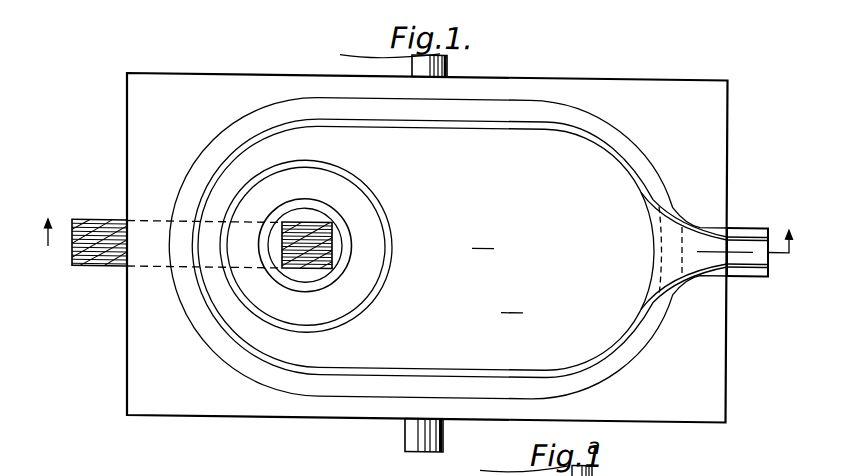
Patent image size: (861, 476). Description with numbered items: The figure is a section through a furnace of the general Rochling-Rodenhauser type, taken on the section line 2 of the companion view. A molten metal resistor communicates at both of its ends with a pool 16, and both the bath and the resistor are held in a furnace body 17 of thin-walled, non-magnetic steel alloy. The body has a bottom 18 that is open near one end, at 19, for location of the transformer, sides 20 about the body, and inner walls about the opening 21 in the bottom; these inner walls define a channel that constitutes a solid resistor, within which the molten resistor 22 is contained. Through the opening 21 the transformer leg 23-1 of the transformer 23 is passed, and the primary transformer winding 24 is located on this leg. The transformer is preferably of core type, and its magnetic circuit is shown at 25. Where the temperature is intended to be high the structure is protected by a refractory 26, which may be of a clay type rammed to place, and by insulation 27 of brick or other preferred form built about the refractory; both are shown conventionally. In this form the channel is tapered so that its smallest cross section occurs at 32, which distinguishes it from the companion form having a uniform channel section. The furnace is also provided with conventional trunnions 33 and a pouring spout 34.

The section line 2- 2 is at (425, 224).
The pool 16 is at (491, 236).
The furnace body 17 is at (330, 368).
The bottom 18 is at (520, 301).
The opening for transformer location 19 is at (150, 328).
The sides 20 is at (530, 120).
The opening in the bottom 21 is at (333, 198).
The molten resistor 22 is at (305, 346).
The transformer 23 is at (105, 266).
The transformer leg 23-1 is at (287, 266).
The primary transformer winding 24 is at (342, 250).
The magnetic circuit 25 is at (80, 266).
The refractory 26 is at (186, 294).
The insulation 27 is at (130, 368).
The smallest cross section of channel 32 is at (212, 237).
The trunnions 33 is at (448, 59).
The pouring spout 34 is at (740, 227).